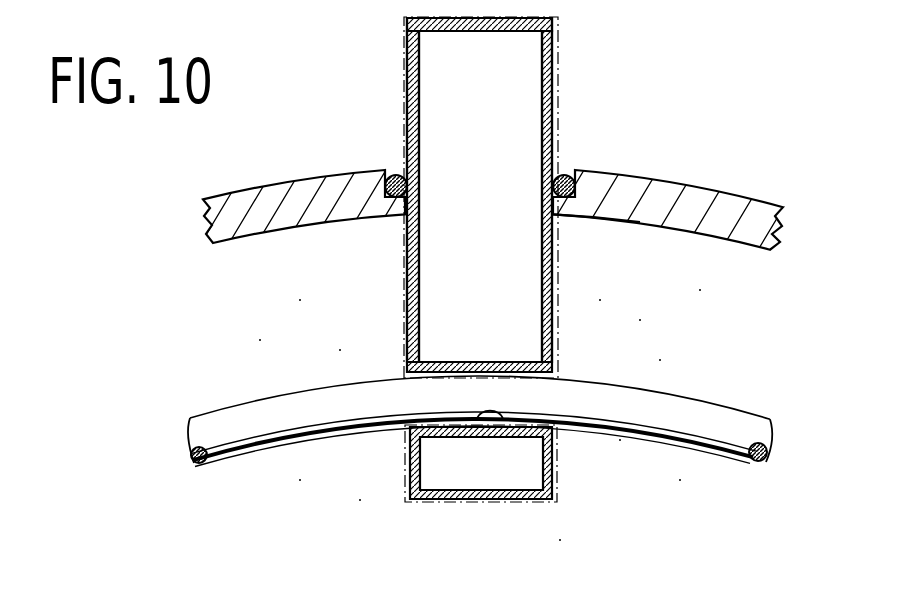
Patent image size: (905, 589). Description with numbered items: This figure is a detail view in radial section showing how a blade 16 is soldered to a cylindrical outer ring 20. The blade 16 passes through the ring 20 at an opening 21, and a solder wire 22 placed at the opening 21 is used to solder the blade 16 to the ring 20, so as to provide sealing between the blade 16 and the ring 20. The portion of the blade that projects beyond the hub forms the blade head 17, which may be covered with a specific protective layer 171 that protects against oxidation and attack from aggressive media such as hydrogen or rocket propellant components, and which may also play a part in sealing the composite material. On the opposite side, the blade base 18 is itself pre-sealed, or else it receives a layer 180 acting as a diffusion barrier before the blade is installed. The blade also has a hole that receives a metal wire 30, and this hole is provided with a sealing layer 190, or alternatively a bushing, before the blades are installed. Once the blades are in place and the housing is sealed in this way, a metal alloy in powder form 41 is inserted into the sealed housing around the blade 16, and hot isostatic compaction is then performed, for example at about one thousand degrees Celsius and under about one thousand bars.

The blade 16 is at (402, 97).
The blade head 17 is at (528, 97).
The protective layer 171 is at (407, 19).
The blade base 18 is at (412, 298).
The outer ring 20 is at (697, 206).
The opening 21 is at (560, 226).
The solder wire 22 is at (566, 177).
The metal wire 30 is at (224, 438).
The metal alloy in powder form 41 is at (705, 336).
The diffusion barrier layer 180 is at (557, 485).
The sealing layer 190 is at (486, 416).